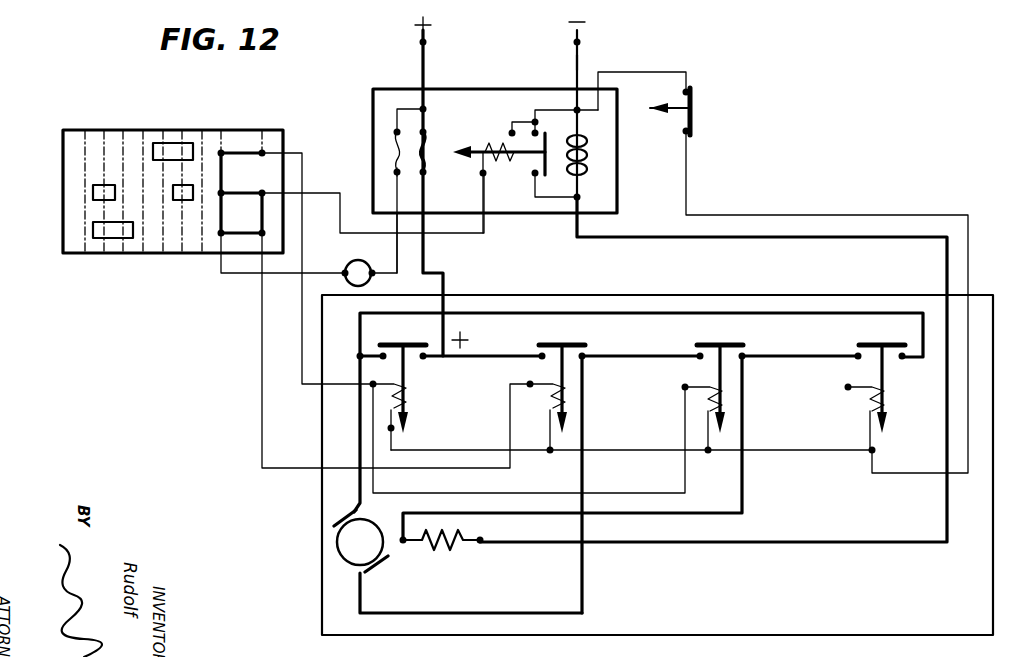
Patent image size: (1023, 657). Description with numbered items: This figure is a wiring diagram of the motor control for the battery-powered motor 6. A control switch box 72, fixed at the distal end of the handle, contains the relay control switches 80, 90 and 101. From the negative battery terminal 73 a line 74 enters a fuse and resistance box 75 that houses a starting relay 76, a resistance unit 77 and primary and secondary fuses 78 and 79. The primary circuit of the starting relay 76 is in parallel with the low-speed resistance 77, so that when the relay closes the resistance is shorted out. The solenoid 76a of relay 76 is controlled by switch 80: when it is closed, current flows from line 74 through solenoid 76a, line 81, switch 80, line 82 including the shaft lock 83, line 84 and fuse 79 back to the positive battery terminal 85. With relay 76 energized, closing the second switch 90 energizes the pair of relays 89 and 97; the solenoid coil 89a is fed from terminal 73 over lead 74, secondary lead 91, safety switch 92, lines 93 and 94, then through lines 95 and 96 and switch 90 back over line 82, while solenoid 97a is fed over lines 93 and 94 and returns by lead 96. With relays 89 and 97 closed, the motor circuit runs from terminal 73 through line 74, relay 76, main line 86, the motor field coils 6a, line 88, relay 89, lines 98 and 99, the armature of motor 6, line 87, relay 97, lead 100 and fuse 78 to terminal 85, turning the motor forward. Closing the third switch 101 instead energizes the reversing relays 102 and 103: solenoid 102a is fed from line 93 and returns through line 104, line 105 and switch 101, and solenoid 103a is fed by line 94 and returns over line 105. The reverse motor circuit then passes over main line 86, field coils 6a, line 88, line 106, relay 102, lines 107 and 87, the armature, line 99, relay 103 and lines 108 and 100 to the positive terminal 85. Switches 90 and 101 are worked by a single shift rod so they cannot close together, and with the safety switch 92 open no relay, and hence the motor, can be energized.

The motor 6 is at (336, 541).
The motor field coils 6a is at (437, 554).
The control switch box 72 is at (63, 178).
The negative battery terminal 73 is at (581, 42).
The line 74 is at (574, 62).
The fuse and resistance box 75 is at (371, 97).
The starting relay 76 is at (524, 162).
The solenoid of starting relay 76a is at (506, 132).
The resistance unit 77 is at (584, 151).
The primary fuse 78 is at (425, 160).
The secondary fuse 79 is at (394, 142).
The switch 80 is at (239, 191).
The line 81 is at (318, 190).
The line 82 is at (248, 275).
The shaft lock 83 is at (346, 262).
The line 84 is at (394, 180).
The positive battery terminal 85 is at (416, 42).
The main line 86 is at (700, 238).
The line 87 is at (297, 428).
The line 88 is at (746, 504).
The relay 89 is at (732, 371).
The solenoid coil of relay 89 89a is at (738, 406).
The second switch 90 is at (244, 150).
The secondary lead 91 is at (652, 70).
The safety switch 92 is at (690, 100).
The line 93 is at (968, 250).
The line 94 is at (454, 450).
The line 95 is at (632, 493).
The line 96 is at (297, 348).
The relay 97 is at (382, 366).
The solenoid of relay 97 97a is at (410, 402).
The line 98 is at (652, 355).
The line 99 is at (486, 613).
The lead 100 is at (445, 284).
The third switch 101 is at (239, 231).
The relay 102 is at (892, 368).
The solenoid of relay 102 102a is at (882, 416).
The relay 103 is at (574, 371).
The solenoid of relay 103 103a is at (574, 406).
The line 104 is at (692, 474).
The line 105 is at (260, 408).
The line 106 is at (792, 357).
The line 107 is at (789, 296).
The line 108 is at (496, 355).